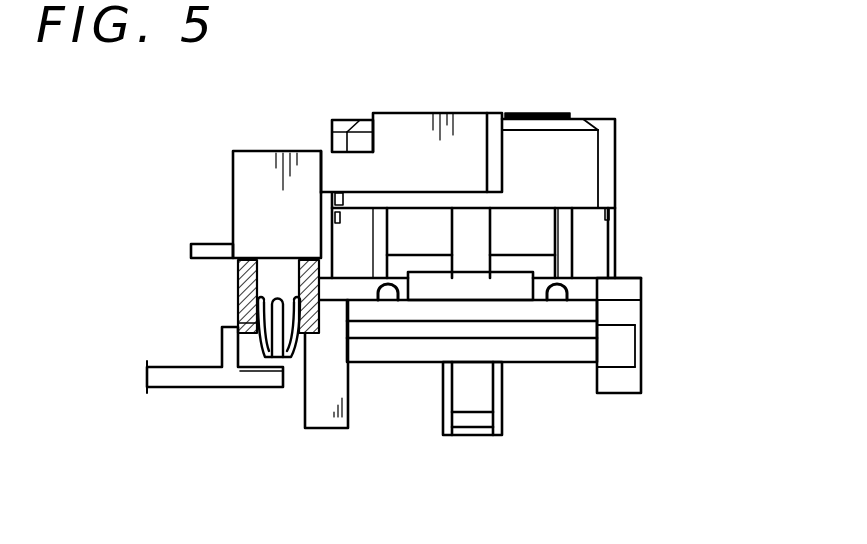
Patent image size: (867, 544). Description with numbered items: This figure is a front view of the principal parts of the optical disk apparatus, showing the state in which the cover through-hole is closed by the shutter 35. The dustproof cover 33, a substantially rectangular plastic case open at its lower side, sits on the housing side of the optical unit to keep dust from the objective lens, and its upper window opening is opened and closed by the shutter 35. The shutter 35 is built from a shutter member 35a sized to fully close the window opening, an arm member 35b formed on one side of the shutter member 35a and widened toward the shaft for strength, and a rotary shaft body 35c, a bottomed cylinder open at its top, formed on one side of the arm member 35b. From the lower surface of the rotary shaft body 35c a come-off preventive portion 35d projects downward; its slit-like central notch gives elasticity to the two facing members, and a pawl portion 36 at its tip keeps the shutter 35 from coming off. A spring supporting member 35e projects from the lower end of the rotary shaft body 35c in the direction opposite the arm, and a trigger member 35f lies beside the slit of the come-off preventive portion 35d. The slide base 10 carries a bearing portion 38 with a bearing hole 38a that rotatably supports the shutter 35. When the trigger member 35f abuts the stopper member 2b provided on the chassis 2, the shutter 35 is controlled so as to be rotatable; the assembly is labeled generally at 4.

The chassis 2 is at (185, 382).
The stopper member 2b is at (230, 348).
The connector 4 is at (363, 106).
The slide base 10 is at (632, 284).
The dustproof cover 33 is at (578, 157).
The shutter 35 is at (222, 153).
The shutter member 35a is at (528, 115).
The arm member 35b is at (330, 163).
The rotary shaft body 35c is at (245, 187).
The come-off preventive portion 35d is at (240, 322).
The spring supporting member 35e is at (192, 253).
The trigger member 35f is at (247, 335).
The pawl portion 36 is at (295, 355).
The bearing portion 38 is at (240, 297).
The bearing hole 38a is at (318, 333).